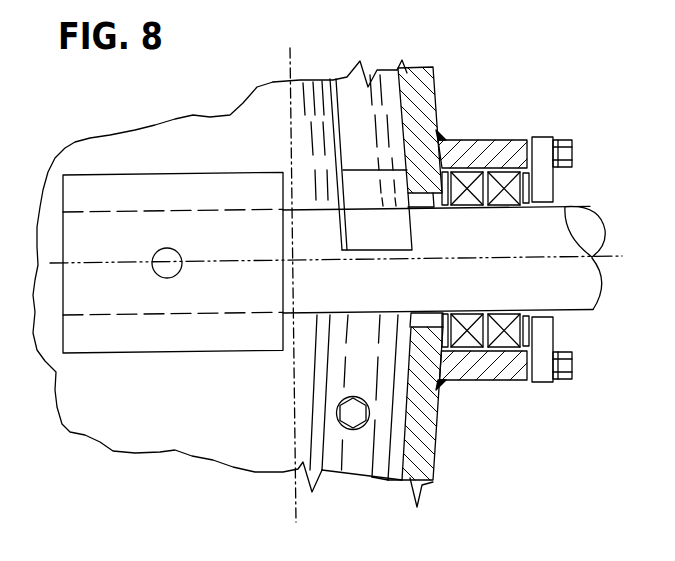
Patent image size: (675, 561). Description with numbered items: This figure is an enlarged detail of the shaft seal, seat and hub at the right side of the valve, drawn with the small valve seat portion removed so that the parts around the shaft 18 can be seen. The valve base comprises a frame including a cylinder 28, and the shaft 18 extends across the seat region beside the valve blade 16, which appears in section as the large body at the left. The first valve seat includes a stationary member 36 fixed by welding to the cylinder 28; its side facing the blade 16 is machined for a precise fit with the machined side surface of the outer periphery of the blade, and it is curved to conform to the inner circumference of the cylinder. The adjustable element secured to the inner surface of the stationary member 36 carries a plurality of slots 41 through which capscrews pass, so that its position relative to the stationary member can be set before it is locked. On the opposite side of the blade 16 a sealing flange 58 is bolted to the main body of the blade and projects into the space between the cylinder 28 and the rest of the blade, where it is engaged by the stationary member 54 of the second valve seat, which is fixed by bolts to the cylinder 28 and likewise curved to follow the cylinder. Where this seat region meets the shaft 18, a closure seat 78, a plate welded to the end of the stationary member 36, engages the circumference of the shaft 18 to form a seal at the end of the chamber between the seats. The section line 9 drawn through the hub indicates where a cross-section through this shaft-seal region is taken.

The valve blade 16 is at (257, 445).
The stationary member 36 is at (347, 92).
The slots 41 is at (338, 185).
The closure seat 78 is at (358, 177).
The cylinder 28 is at (423, 122).
The shaft 18 is at (585, 265).
The sealing flange 58 is at (380, 453).
The stationary member 54 is at (400, 477).
The section line 9- 9 is at (285, 55).